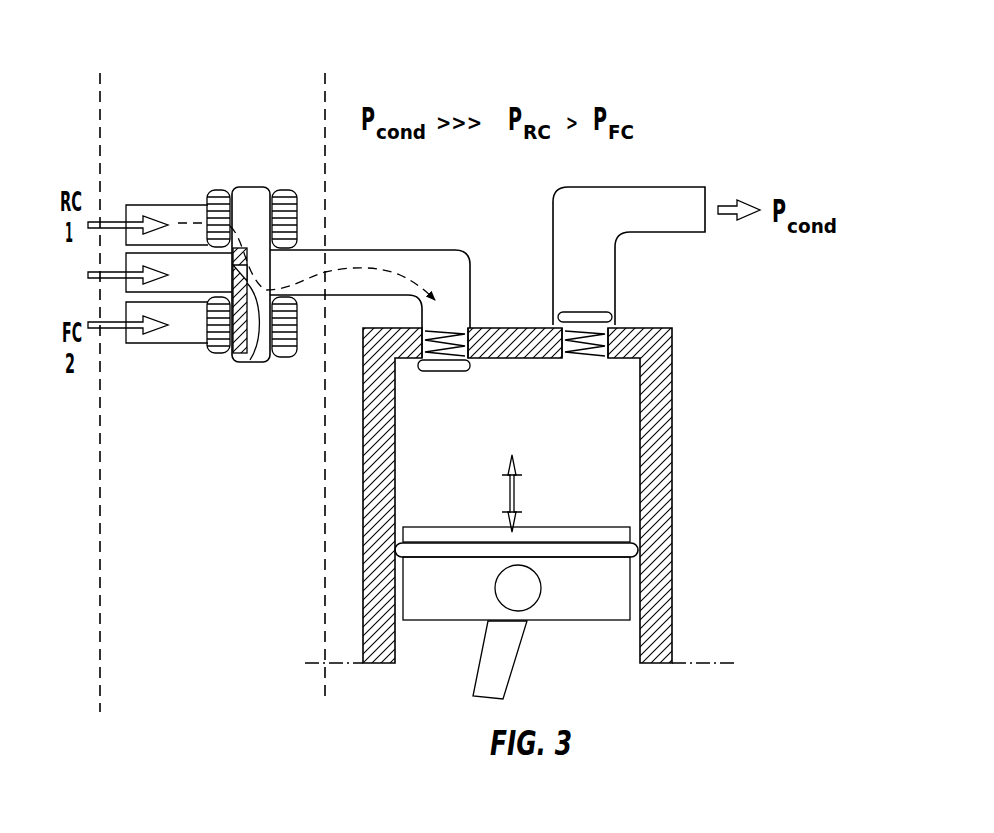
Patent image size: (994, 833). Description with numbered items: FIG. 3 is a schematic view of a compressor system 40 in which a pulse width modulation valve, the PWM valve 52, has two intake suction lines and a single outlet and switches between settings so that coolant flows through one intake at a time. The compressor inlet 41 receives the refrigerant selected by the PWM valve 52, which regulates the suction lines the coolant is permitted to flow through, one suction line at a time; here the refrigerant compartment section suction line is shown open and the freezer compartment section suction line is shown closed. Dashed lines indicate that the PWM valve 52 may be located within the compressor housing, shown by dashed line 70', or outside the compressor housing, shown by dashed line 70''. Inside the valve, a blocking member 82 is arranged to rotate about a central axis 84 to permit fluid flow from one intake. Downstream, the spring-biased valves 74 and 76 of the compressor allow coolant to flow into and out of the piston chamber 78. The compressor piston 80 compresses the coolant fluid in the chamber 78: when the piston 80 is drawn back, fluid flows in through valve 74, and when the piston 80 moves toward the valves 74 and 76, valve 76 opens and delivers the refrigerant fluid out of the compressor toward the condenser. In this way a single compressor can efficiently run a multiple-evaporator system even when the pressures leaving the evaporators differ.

The compressor assembly 40 is at (768, 88).
The compressor inlet 41 is at (125, 237).
The PWM valve 52 is at (212, 148).
The compressor housing dashed line 70' is at (134, 384).
The compressor housing dashed line 70'' is at (358, 364).
The spring-biased valve 74 is at (430, 347).
The spring-biased valve 76 is at (672, 340).
The piston chamber 78 is at (600, 470).
The compressor piston 80 is at (448, 595).
The blocking member 82 is at (237, 358).
The central axis 84 is at (256, 354).